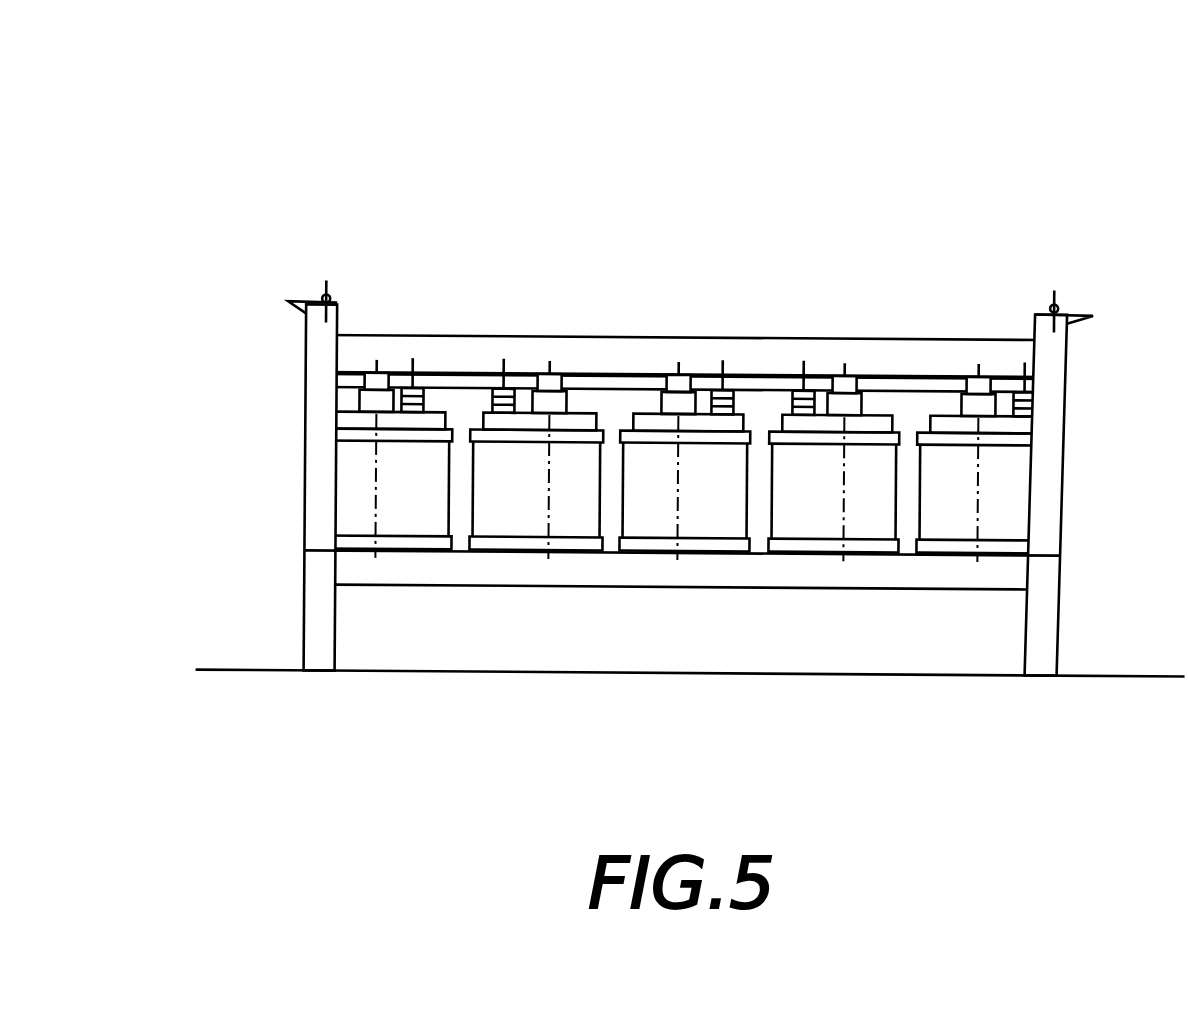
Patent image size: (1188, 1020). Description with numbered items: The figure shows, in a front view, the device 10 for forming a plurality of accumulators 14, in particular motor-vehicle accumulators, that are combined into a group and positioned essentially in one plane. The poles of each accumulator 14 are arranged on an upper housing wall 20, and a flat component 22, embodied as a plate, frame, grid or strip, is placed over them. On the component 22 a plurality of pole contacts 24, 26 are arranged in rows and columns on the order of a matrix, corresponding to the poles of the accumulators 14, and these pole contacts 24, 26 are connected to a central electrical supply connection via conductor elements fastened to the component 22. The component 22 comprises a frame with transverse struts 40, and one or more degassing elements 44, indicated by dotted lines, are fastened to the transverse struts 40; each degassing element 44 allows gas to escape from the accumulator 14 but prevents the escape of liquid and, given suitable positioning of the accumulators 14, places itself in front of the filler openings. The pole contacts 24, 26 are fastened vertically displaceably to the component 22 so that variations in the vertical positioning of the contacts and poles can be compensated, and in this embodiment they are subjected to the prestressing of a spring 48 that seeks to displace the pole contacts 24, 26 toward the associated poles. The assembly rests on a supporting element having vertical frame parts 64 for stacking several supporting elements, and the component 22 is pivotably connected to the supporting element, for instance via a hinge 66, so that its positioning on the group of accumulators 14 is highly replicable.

The device 10 is at (423, 203).
The accumulator 14 is at (355, 503).
The upper housing wall 20 is at (574, 428).
The component 22 is at (867, 295).
The pole contact 24 is at (415, 403).
The pole contact 26 is at (502, 373).
The transverse strut 40 is at (547, 407).
The degassing element 44 is at (553, 410).
The spring 48 is at (408, 392).
The frame part 64 is at (322, 415).
The hinge 66 is at (450, 572).